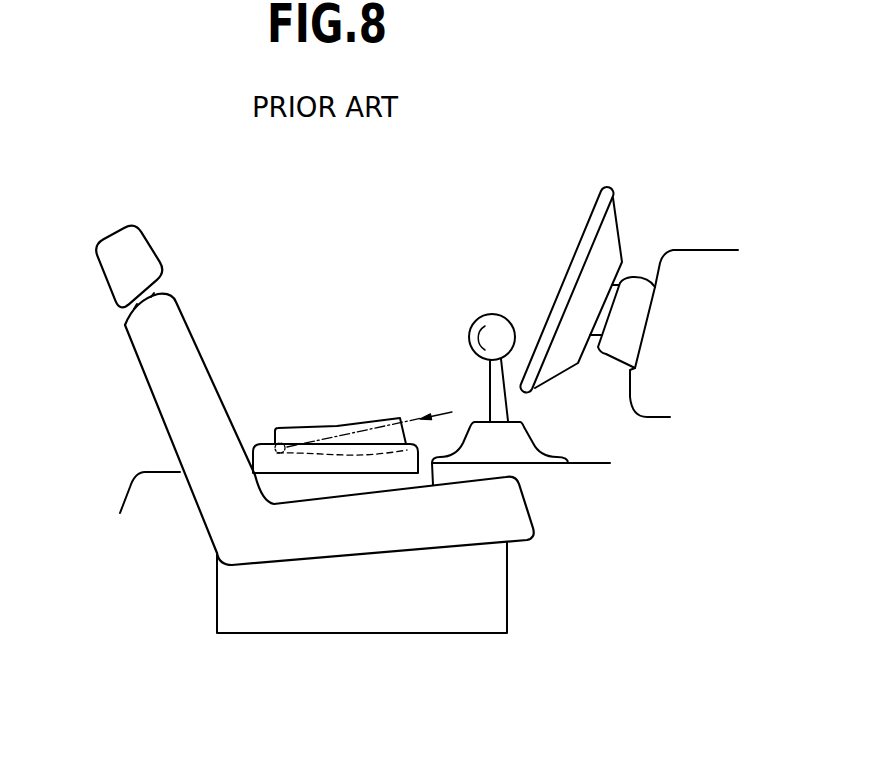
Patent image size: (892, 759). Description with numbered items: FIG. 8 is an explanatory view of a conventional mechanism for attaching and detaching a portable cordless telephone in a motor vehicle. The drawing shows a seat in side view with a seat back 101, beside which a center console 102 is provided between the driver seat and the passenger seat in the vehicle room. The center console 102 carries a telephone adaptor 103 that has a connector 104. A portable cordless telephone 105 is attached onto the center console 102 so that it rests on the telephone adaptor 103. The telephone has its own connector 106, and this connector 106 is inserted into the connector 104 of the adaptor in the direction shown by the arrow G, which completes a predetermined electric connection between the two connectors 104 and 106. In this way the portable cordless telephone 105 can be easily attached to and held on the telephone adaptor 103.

The seat back 101 is at (180, 347).
The center console 102 is at (133, 483).
The telephone adaptor 103 is at (265, 450).
The connector 104 is at (290, 453).
The portable cordless telephone 105 is at (337, 427).
The connector 106 is at (283, 447).